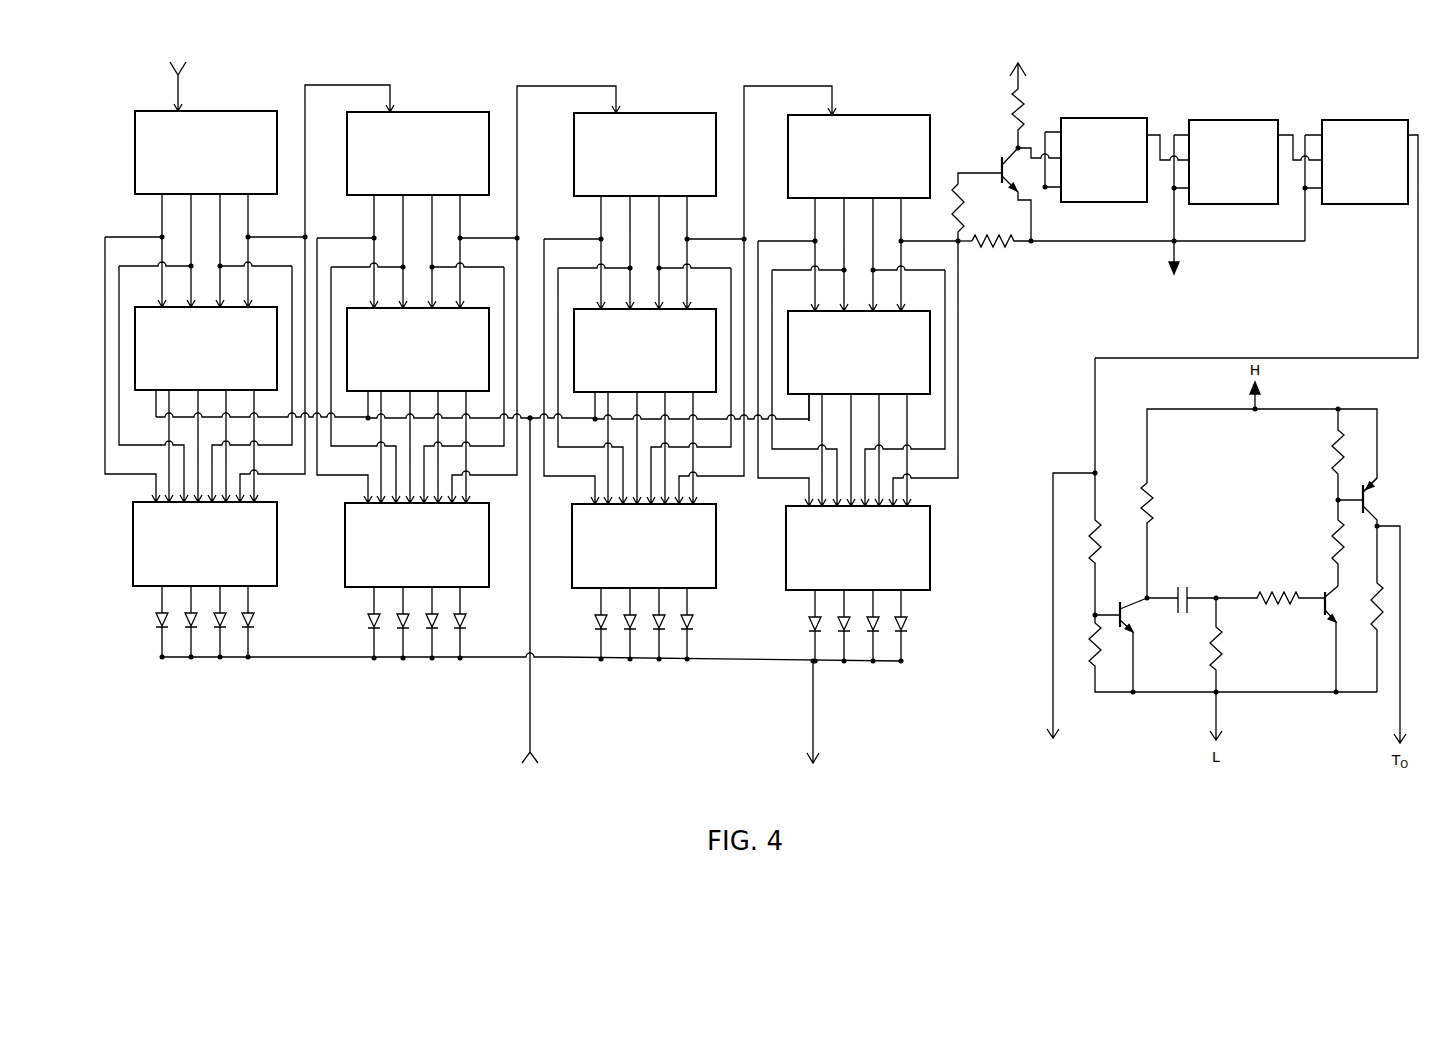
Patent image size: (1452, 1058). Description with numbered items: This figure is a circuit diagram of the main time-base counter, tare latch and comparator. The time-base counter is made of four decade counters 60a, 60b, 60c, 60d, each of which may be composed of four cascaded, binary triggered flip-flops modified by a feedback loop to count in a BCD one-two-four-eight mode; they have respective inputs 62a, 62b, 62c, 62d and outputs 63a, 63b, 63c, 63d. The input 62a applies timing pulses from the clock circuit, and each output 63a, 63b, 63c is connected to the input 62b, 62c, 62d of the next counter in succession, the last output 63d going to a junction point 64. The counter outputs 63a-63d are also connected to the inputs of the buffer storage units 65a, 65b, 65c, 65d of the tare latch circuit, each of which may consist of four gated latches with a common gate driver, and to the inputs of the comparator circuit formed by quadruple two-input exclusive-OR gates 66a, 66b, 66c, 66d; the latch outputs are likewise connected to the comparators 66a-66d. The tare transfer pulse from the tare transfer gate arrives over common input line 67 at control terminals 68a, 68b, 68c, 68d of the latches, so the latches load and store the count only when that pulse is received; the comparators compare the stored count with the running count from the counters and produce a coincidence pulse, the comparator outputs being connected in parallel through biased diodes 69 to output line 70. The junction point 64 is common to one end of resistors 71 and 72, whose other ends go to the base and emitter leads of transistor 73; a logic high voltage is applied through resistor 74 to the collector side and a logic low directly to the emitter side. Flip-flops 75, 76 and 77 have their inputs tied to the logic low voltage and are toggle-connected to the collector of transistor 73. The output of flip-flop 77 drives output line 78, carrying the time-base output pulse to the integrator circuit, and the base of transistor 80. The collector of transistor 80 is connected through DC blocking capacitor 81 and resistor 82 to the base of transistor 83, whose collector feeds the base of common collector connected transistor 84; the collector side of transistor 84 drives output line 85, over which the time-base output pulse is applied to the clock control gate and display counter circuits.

The decade counter 60a is at (211, 134).
The decade counter 60b is at (424, 135).
The decade counter 60c is at (648, 136).
The decade counter 60d is at (861, 138).
The counter input 62a is at (204, 76).
The counter input 62b is at (374, 151).
The counter input 62c is at (591, 152).
The counter input 62d is at (811, 153).
The counter output 63a is at (115, 214).
The counter output 63b is at (417, 426).
The counter output 63c is at (644, 427).
The counter output 63d is at (858, 429).
The junction point 64 is at (960, 246).
The buffer storage unit 65a is at (120, 330).
The buffer storage unit 65b is at (420, 335).
The buffer storage unit 65c is at (646, 336).
The buffer storage unit 65d is at (863, 338).
The exclusive-OR gate comparator 66a is at (135, 522).
The exclusive-OR gate comparator 66b is at (436, 540).
The exclusive-OR gate comparator 66c is at (665, 542).
The exclusive-OR gate comparator 66d is at (882, 544).
The common input line 67 is at (530, 720).
The control terminal 68a is at (248, 422).
The control terminal 68b is at (466, 423).
The control terminal 68c is at (686, 424).
The control terminal 68d is at (793, 420).
The diodes 69 is at (253, 620).
The output line 70 is at (813, 725).
The resistor 71 is at (962, 220).
The resistor 72 is at (1015, 246).
The transistor 73 is at (997, 154).
The resistor 74 is at (1020, 97).
The flip-flop 75 is at (1122, 133).
The flip-flop 76 is at (1254, 128).
The flip-flop 77 is at (1387, 128).
The output line 78 is at (1052, 643).
The transistor 80 is at (1128, 618).
The DC blocking capacitor 81 is at (1190, 589).
The resistor 82 is at (1266, 602).
The transistor 83 is at (1335, 615).
The common collector connected transistor 84 is at (1374, 502).
The output line 85 is at (1400, 690).